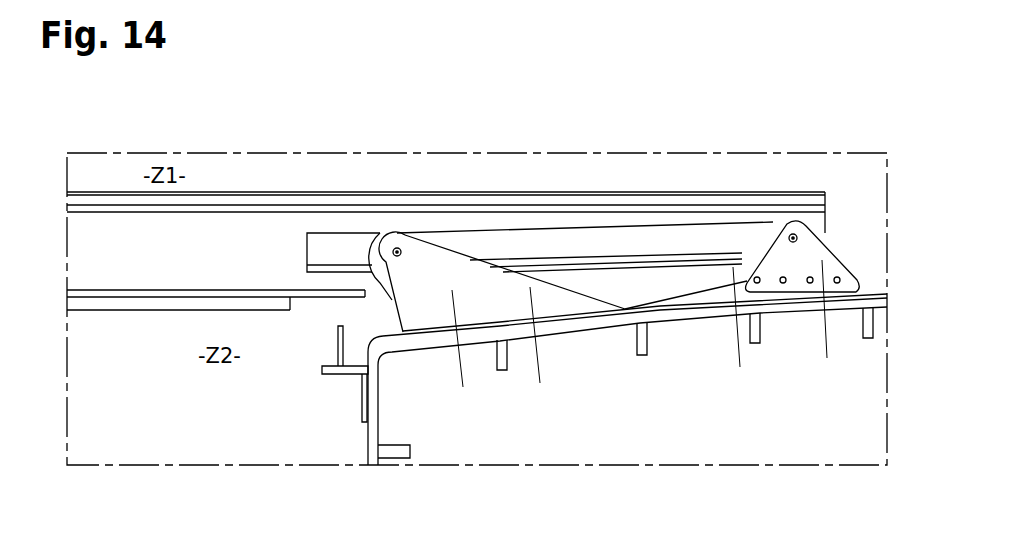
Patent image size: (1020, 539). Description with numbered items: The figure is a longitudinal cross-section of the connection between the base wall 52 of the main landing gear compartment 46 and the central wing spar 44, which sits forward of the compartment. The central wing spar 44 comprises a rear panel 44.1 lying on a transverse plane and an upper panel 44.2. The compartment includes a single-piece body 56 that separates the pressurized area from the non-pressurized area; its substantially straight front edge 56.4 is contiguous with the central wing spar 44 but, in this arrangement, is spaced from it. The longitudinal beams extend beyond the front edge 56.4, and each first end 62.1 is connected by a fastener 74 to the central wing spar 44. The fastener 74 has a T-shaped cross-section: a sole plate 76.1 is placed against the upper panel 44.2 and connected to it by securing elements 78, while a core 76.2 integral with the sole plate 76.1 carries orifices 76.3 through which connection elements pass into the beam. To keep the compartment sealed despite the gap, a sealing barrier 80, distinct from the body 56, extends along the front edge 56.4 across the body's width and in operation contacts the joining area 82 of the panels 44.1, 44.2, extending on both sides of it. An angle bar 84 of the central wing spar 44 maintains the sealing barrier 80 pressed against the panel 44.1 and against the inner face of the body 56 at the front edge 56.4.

The central wing spar 44 is at (635, 363).
The rear panel 44.1 is at (373, 430).
The upper panel 44.2 is at (723, 313).
The main landing gear compartment 46 is at (158, 408).
The base wall 52 is at (100, 312).
The body 56 is at (130, 323).
The front edge 56.4 is at (367, 258).
The first end 62.1 is at (673, 217).
The fastener 74 is at (748, 241).
The sole plate 76.1 is at (573, 328).
The core 76.2 is at (433, 263).
The orifice 76.3 is at (397, 247).
The securing elements 78 is at (462, 373).
The sealing barrier 80 is at (343, 311).
The joining area 82 is at (342, 375).
The angle bar 84 is at (331, 375).